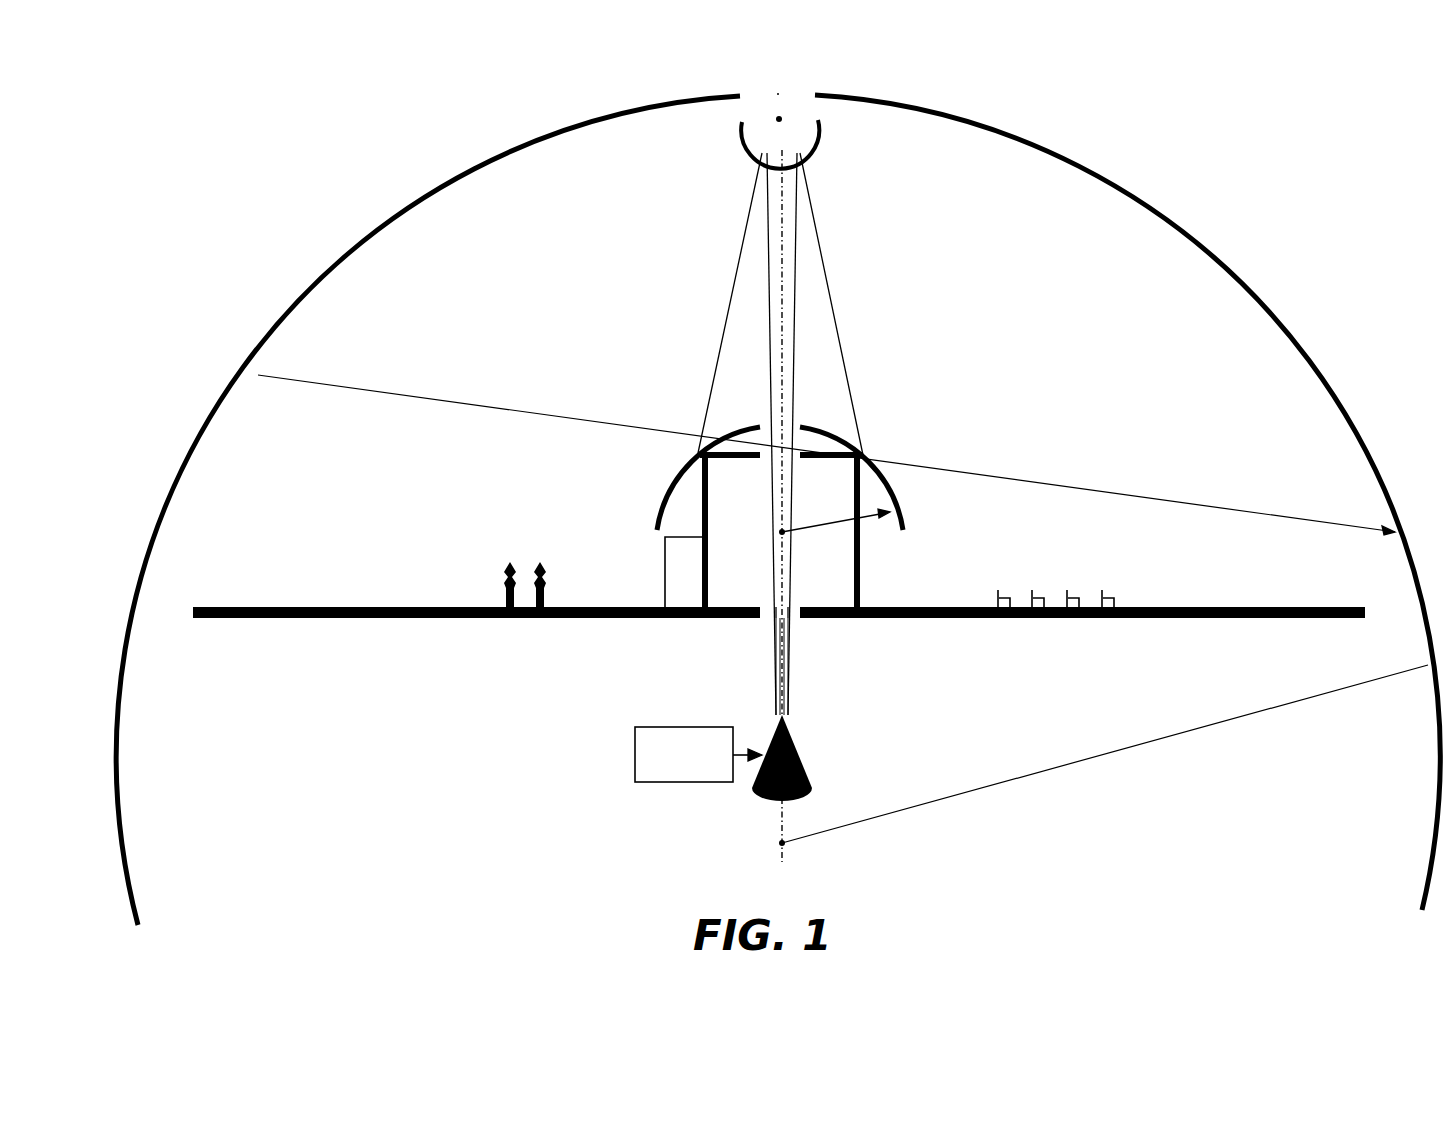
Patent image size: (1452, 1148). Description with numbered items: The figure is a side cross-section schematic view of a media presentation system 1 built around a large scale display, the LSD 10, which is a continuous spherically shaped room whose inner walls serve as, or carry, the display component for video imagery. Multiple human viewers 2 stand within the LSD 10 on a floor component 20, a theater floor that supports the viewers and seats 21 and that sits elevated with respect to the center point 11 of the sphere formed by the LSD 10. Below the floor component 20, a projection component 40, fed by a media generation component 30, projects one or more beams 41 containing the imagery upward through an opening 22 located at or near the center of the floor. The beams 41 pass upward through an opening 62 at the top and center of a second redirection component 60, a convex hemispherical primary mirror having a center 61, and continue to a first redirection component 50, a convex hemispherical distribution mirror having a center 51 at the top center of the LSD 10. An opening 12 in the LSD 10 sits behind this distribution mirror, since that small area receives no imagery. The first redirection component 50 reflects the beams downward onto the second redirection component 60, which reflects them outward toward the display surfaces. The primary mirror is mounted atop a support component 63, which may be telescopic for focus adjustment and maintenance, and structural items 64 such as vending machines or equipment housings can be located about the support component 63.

The media presentation system 1 is at (287, 115).
The LSD 10 is at (540, 128).
The opening 12 is at (757, 92).
The first redirection component 50 is at (795, 152).
The center 51 is at (741, 122).
The opening 62 is at (800, 418).
The second redirection component 60 is at (880, 455).
The structural items 64 is at (665, 565).
The center 61 is at (780, 535).
The support component 63 is at (858, 560).
The floor component 20 is at (355, 620).
The human viewers 2 is at (503, 618).
The seats 21 is at (1035, 618).
The opening 22 is at (775, 619).
The beams 41 is at (787, 672).
The media generation component 30 is at (698, 754).
The projection component 40 is at (752, 787).
The center point 11 is at (788, 848).